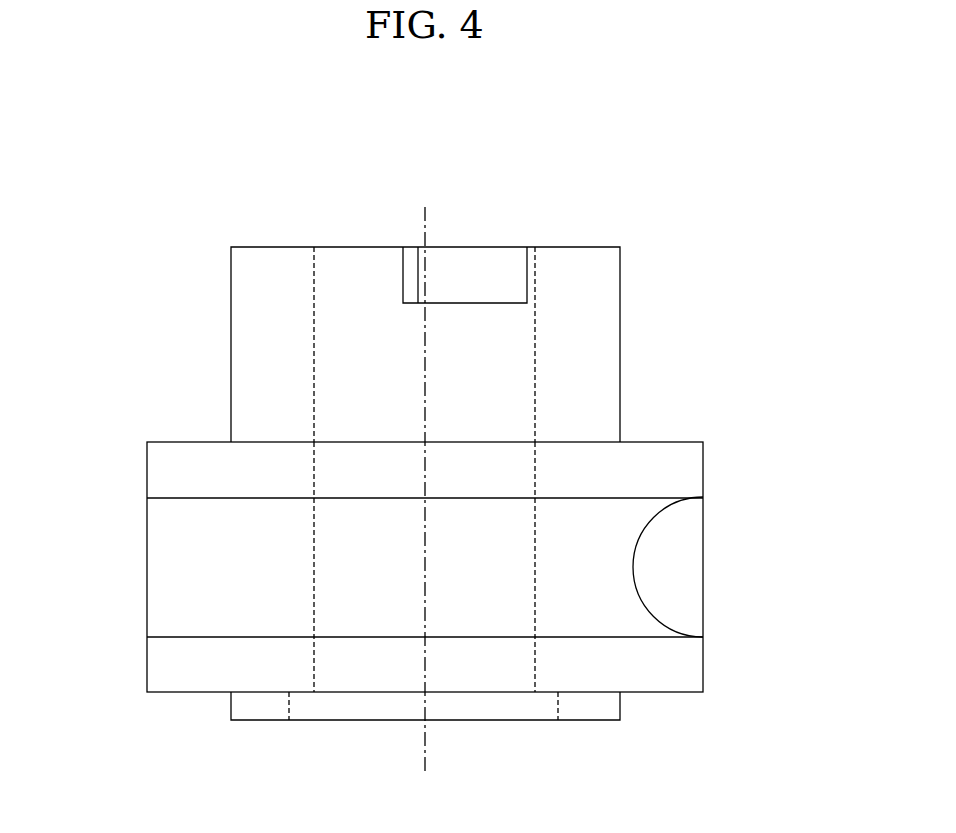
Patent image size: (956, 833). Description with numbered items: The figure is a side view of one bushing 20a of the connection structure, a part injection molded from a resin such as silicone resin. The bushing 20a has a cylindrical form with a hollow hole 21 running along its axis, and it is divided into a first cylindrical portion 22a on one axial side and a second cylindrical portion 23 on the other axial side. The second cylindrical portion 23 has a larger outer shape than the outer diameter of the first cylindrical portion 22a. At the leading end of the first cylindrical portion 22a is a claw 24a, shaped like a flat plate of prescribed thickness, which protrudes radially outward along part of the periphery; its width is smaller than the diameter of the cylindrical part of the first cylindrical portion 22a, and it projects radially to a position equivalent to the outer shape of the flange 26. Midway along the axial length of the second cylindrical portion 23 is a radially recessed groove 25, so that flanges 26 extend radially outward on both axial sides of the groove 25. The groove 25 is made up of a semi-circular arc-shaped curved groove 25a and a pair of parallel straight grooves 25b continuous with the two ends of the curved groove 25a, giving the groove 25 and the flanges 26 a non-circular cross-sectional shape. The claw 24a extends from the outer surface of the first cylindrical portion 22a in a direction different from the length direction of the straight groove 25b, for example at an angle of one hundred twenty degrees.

The bushing 20a is at (436, 464).
The hollow hole 21 is at (314, 276).
The first cylindrical portion 22a is at (370, 311).
The second cylindrical portion 23 is at (436, 598).
The claw 24a is at (473, 304).
The groove 25 is at (726, 567).
The curved groove 25a is at (636, 551).
The straight groove 25b is at (276, 608).
The flange 26 is at (703, 467).